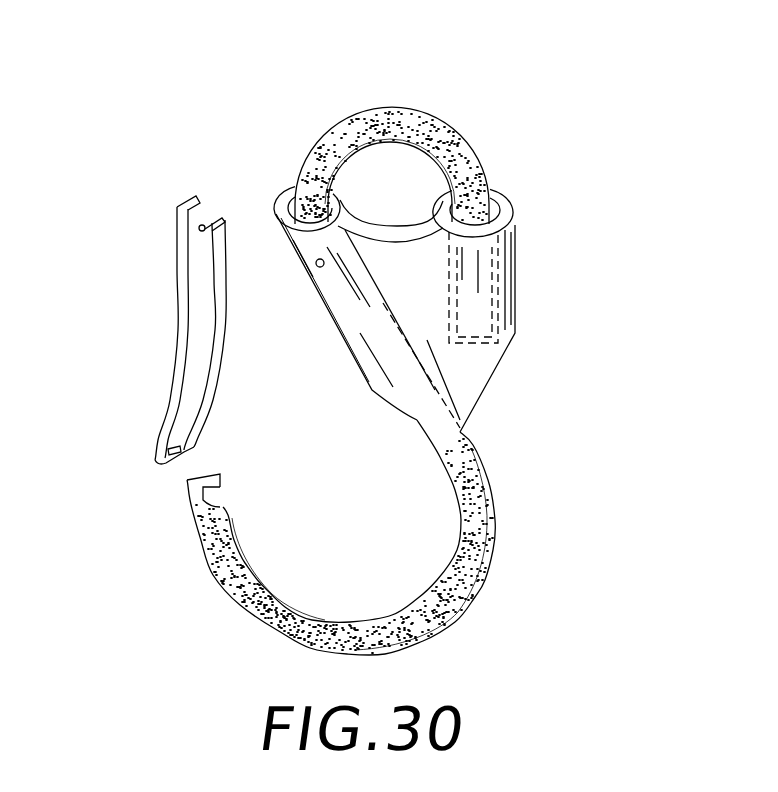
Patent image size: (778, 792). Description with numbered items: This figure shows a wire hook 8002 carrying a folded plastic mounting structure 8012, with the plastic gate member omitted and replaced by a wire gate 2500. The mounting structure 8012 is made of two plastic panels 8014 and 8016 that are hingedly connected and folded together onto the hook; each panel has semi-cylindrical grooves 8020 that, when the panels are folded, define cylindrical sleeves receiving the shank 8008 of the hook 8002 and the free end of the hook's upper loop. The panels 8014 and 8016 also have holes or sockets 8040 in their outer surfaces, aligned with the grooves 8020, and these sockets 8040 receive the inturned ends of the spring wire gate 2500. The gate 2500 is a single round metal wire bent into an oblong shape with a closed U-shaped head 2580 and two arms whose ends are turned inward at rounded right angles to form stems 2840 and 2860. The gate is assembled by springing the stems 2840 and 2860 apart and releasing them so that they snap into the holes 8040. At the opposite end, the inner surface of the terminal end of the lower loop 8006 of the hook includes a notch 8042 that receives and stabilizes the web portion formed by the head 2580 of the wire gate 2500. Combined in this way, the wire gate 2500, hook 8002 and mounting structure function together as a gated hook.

The wire hook 8002 is at (379, 355).
The semi-cylindrical grooves 8020 is at (278, 202).
The plastic panel 8014 is at (397, 227).
The plastic mounting structure 8012 is at (380, 318).
The holes or sockets 8040 is at (314, 268).
The plastic panel 8016 is at (473, 387).
The shank 8008 is at (470, 509).
The lower loop 8006 is at (262, 597).
The notch 8042 is at (222, 500).
The wire gate 2500 is at (135, 309).
The stem 2840 is at (183, 202).
The stem 2860 is at (205, 220).
The U-shaped head 2580 is at (163, 466).